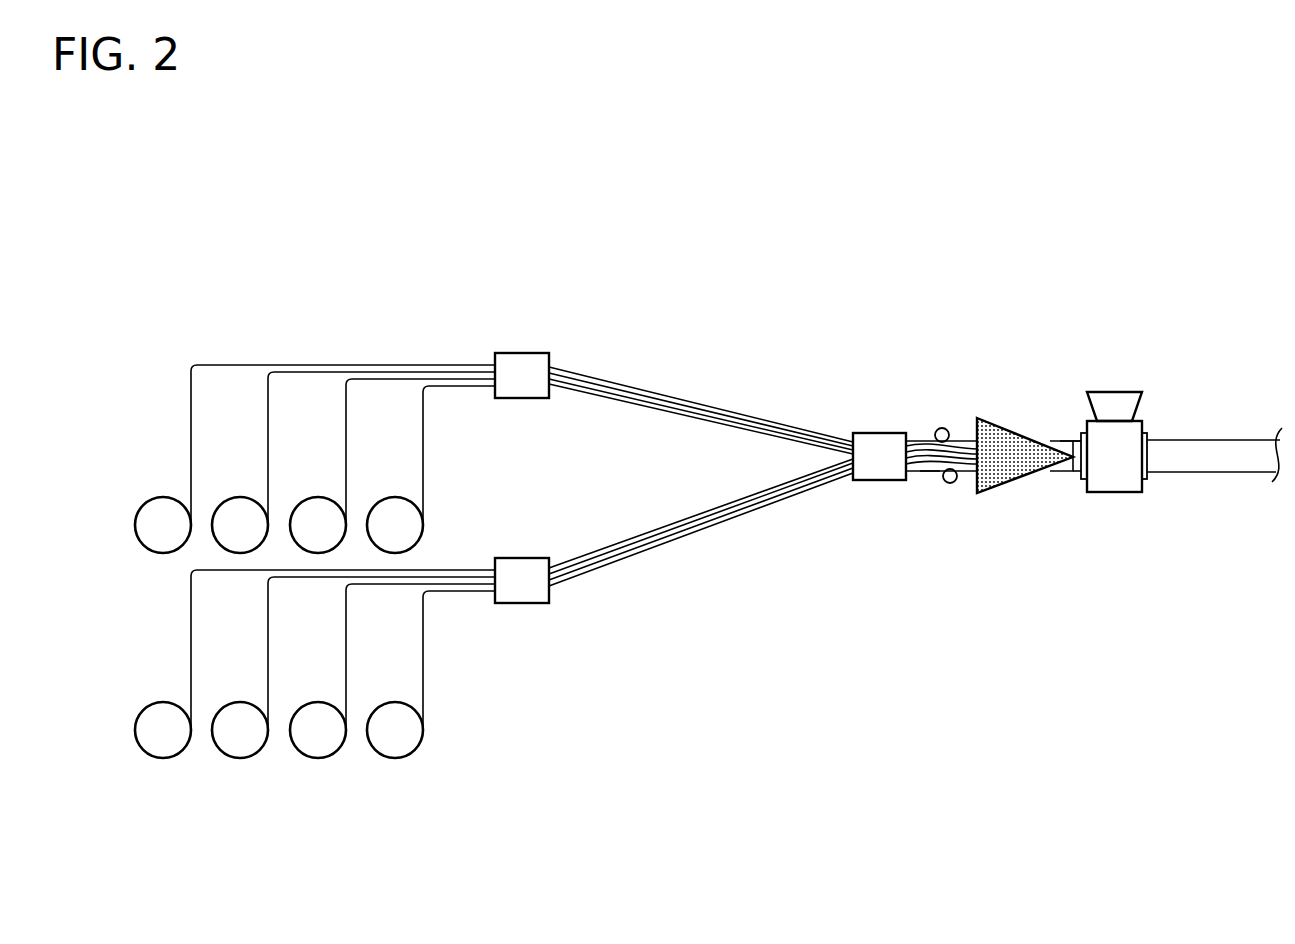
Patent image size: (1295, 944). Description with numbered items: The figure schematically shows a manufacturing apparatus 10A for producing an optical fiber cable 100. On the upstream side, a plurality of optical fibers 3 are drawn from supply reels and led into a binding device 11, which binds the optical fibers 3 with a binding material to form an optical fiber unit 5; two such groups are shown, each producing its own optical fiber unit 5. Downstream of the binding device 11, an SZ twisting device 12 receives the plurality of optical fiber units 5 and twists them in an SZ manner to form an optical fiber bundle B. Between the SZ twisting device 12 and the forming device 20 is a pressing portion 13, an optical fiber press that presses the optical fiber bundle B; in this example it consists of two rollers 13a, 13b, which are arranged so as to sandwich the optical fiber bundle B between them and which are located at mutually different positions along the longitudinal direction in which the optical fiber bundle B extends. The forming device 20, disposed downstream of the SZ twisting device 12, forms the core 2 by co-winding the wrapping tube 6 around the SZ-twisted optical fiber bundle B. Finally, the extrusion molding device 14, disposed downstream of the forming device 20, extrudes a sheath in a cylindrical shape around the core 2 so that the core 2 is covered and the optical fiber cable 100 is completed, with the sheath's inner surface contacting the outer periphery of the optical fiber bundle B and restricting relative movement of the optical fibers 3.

The manufacturing apparatus 10A is at (305, 262).
The optical fibers 3 is at (424, 445).
The optical fiber unit 5 is at (605, 398).
The binding device 11 is at (517, 352).
The SZ twisting device 12 is at (876, 433).
The pressing portion 13 is at (978, 432).
The roller 13a is at (945, 427).
The roller 13b is at (950, 484).
The forming device 20 is at (1010, 416).
The wrapping tube 6 is at (1068, 446).
The extrusion molding device 14 is at (1152, 389).
The optical fiber cable 100 is at (1205, 426).
The core 2 is at (1061, 480).
The optical fiber bundle B is at (931, 478).